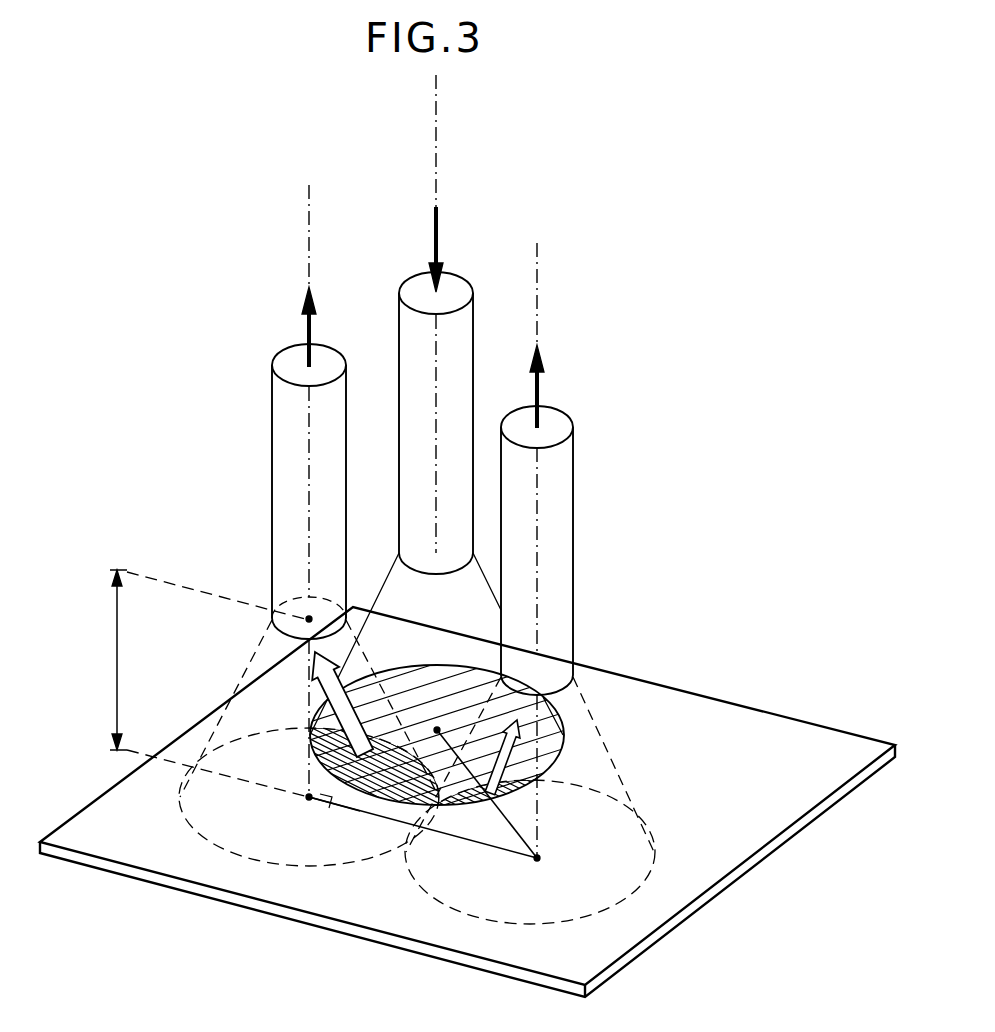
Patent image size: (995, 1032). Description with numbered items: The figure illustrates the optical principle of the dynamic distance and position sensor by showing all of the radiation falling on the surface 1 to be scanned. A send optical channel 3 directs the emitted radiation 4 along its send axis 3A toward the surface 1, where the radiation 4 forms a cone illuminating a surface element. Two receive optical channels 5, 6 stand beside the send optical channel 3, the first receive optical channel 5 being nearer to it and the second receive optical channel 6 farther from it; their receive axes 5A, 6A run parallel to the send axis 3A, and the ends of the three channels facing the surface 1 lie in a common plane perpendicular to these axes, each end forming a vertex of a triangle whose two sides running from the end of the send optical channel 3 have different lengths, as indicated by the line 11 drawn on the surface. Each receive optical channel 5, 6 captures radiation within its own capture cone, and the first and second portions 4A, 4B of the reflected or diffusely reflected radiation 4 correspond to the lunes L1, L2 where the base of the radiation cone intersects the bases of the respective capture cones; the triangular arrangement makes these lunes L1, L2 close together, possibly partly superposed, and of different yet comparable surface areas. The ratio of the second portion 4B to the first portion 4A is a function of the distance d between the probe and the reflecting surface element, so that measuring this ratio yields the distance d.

The surface 1 is at (732, 722).
The send optical channel 3 is at (413, 433).
The send axis 3A is at (437, 167).
The emitted radiation 4 is at (394, 566).
The first portion of reflected radiation 4A is at (323, 686).
The second portion of reflected radiation 4B is at (540, 775).
The first receive optical channel 5 is at (281, 478).
The first receive axis 5A is at (308, 222).
The second receive optical channel 6 is at (566, 517).
The second receive axis 6A is at (537, 308).
The line between receiver axes 11 is at (424, 816).
The first lune L1 is at (360, 811).
The second lune L2 is at (473, 802).
The distance d is at (199, 683).